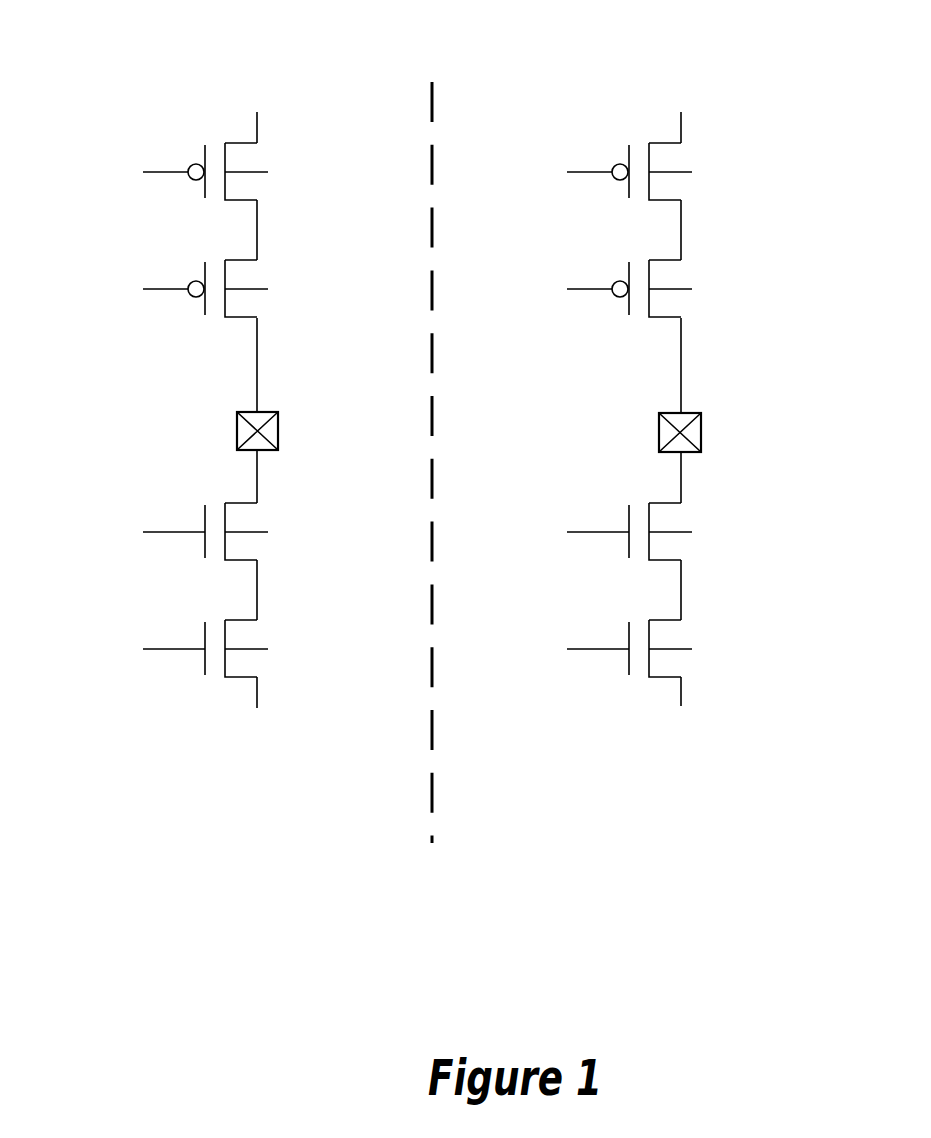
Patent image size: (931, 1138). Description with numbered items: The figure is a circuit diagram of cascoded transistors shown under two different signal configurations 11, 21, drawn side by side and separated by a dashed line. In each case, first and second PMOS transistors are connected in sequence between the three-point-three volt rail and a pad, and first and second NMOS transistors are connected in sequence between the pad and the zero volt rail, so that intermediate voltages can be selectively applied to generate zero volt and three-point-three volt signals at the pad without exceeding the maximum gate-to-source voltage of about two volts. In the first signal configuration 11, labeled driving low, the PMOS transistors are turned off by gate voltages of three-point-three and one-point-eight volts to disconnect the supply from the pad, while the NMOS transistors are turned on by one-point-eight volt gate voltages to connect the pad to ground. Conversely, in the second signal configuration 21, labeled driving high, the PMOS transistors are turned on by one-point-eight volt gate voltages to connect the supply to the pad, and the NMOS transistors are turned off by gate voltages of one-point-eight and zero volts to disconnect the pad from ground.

The first signal configuration 11 is at (133, 23).
The second signal configuration 21 is at (512, 23).